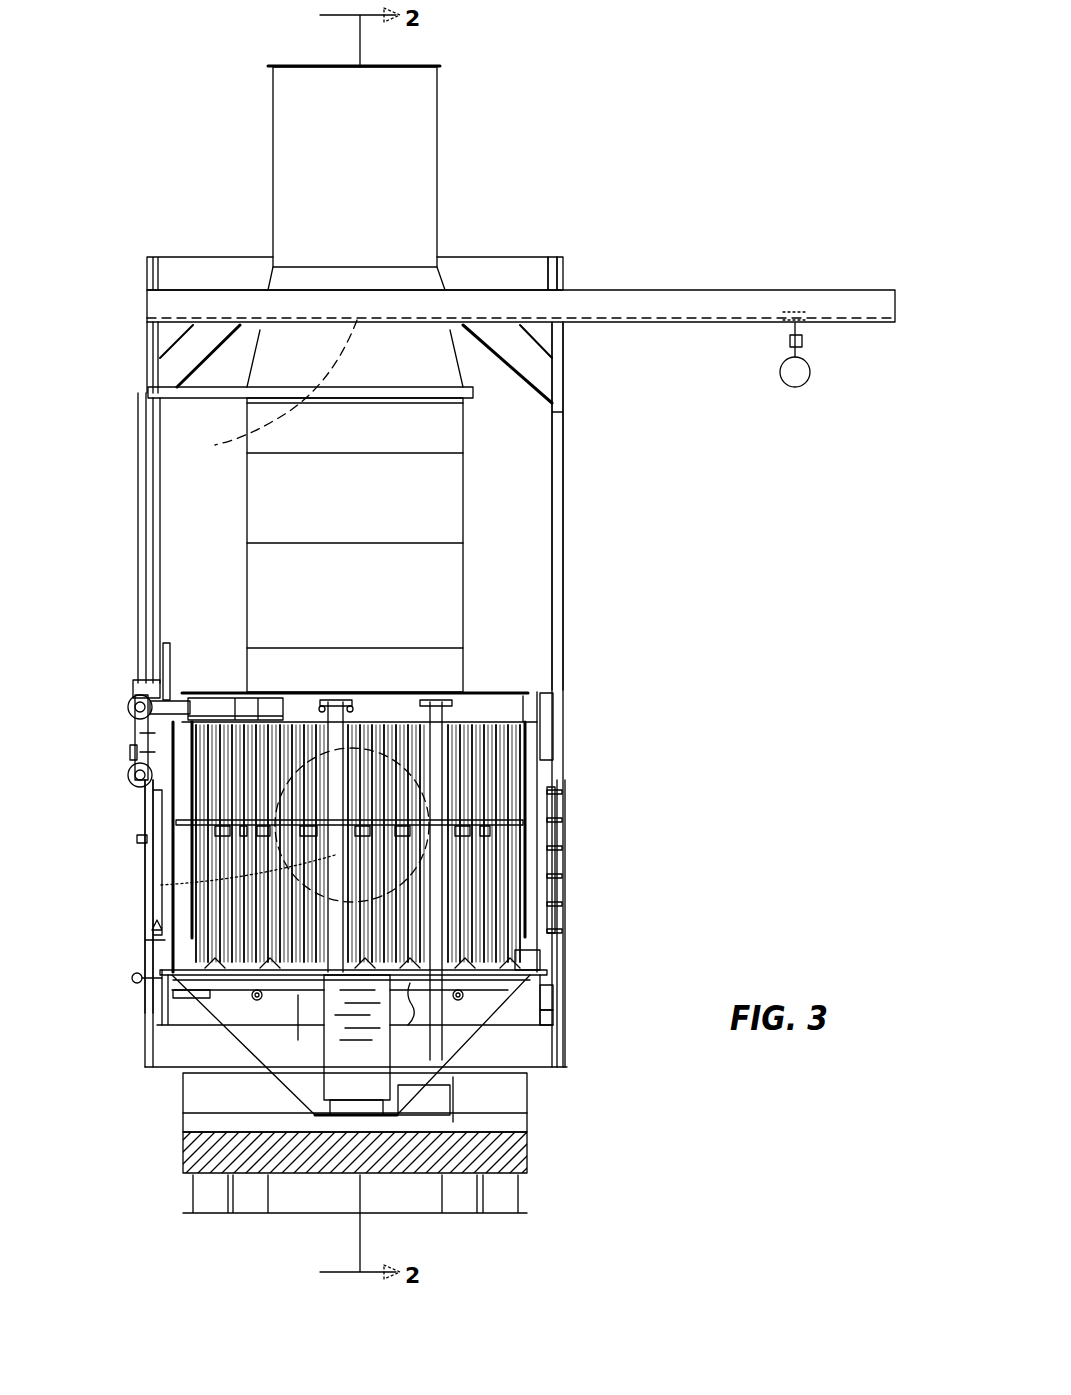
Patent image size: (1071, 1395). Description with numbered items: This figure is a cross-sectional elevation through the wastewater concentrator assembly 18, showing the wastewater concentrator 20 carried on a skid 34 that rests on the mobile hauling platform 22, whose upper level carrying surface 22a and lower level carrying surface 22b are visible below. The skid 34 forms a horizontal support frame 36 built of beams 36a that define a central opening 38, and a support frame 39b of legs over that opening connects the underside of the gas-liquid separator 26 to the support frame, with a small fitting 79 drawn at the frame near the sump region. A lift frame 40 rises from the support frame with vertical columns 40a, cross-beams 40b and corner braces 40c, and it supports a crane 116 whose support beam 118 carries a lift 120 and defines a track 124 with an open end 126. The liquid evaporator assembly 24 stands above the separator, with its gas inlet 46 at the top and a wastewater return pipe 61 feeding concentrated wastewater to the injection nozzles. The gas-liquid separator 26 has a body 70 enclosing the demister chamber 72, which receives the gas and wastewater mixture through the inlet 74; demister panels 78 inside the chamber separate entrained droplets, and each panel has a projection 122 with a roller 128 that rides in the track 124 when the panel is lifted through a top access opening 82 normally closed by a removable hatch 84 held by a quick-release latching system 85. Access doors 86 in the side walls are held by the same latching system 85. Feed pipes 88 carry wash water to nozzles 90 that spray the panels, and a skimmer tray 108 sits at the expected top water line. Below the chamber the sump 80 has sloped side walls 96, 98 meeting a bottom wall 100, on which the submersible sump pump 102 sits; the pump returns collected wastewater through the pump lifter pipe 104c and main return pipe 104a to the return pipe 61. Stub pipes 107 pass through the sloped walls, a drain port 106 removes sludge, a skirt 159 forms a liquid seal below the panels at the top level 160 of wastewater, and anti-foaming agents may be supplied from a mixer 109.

The wastewater concentrator assembly 18 is at (683, 62).
The gas inlet 46 is at (440, 100).
The lift frame 40 is at (565, 270).
The vertical column 40a is at (563, 428).
The cross-beam 40b is at (538, 257).
The corner brace 40c is at (470, 300).
The crane 116 is at (814, 292).
The support beam 118 is at (873, 325).
The lift 120 is at (812, 364).
The track 124 is at (742, 320).
The skid 34 is at (563, 462).
The wastewater concentrator 20 is at (565, 520).
The liquid evaporator assembly 24 is at (465, 520).
The wastewater return pipe 61 is at (228, 393).
The open end 126 is at (232, 443).
The removable hatch 84 is at (480, 692).
The top access opening 82 is at (505, 700).
The projection 122 is at (335, 700).
The roller 128 is at (322, 703).
The demister chamber 72 is at (492, 800).
The inlet 74 is at (520, 895).
The feed pipe 88 is at (143, 822).
The nozzle 90 is at (230, 840).
The main return pipe 104a is at (137, 712).
The pump lifter pipe 104c is at (160, 885).
The access door 86 is at (158, 918).
The body 70 is at (535, 812).
The gas-liquid separator 26 is at (552, 742).
The quick-release latching system 85 is at (560, 848).
The demister panel 78 is at (540, 958).
The skimmer tray 108 is at (525, 966).
The mixer 109 is at (547, 1000).
The sump 80 is at (450, 1050).
The stub pipe 107 is at (257, 1001).
The top level 160 is at (298, 1040).
The skirt 159 is at (415, 1030).
The submersible sump pump 102 is at (360, 1090).
The side wall 96 is at (305, 1100).
The bottom wall 100 is at (372, 1112).
The side wall 98 is at (415, 1100).
The drain port 106 is at (443, 1105).
The horizontal support frame 36 is at (147, 1042).
The beam 36a is at (173, 1050).
The central opening 38 is at (219, 1058).
The pin 79 is at (213, 992).
The support frame 39b is at (553, 1022).
The mobile hauling platform 22 is at (530, 1150).
The upper level carrying surface 22a is at (222, 1075).
The lower level carrying surface 22b is at (200, 1175).